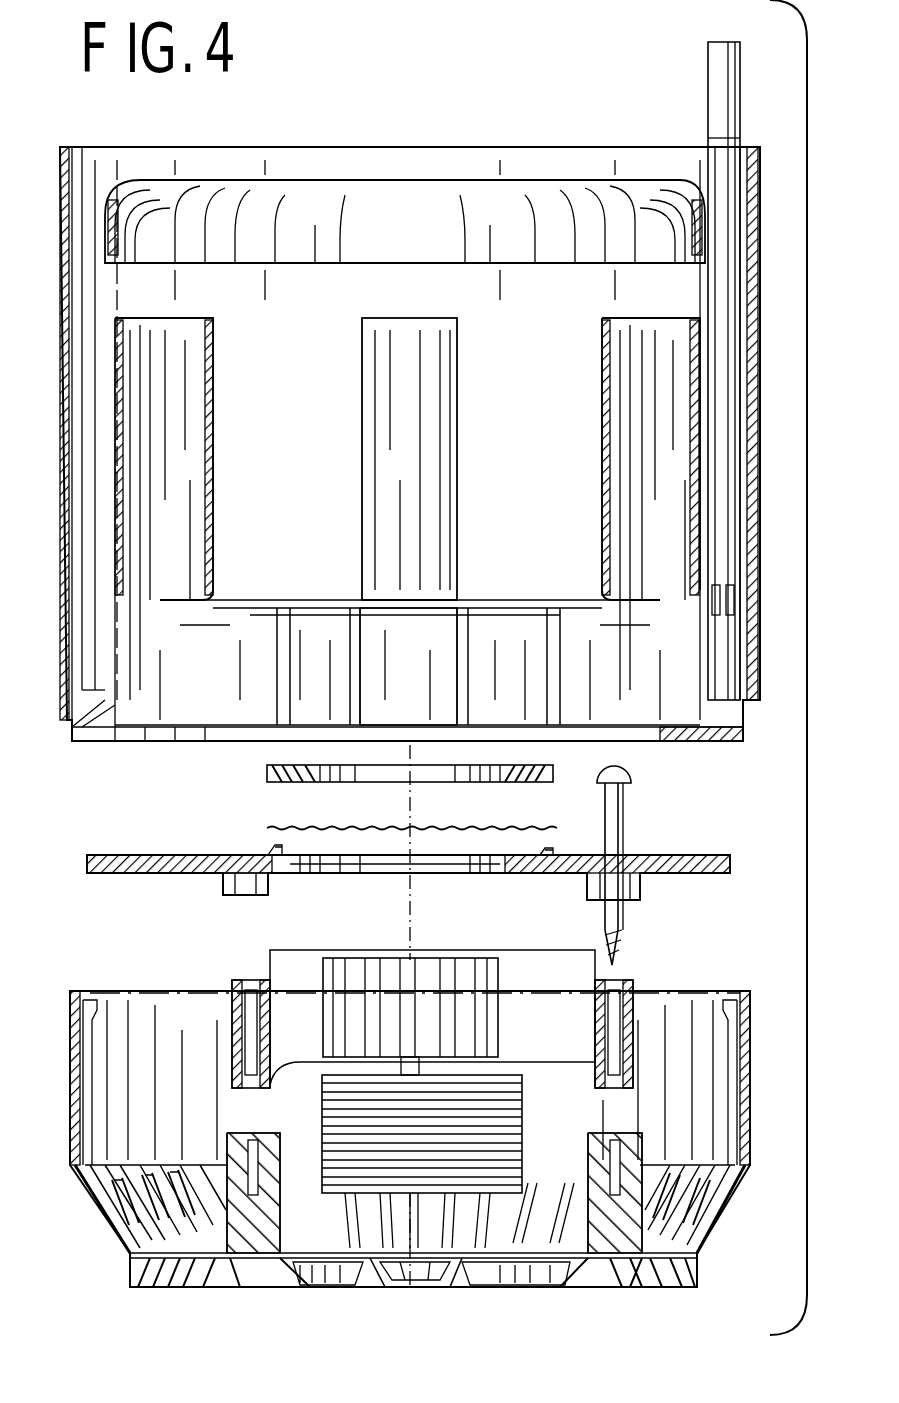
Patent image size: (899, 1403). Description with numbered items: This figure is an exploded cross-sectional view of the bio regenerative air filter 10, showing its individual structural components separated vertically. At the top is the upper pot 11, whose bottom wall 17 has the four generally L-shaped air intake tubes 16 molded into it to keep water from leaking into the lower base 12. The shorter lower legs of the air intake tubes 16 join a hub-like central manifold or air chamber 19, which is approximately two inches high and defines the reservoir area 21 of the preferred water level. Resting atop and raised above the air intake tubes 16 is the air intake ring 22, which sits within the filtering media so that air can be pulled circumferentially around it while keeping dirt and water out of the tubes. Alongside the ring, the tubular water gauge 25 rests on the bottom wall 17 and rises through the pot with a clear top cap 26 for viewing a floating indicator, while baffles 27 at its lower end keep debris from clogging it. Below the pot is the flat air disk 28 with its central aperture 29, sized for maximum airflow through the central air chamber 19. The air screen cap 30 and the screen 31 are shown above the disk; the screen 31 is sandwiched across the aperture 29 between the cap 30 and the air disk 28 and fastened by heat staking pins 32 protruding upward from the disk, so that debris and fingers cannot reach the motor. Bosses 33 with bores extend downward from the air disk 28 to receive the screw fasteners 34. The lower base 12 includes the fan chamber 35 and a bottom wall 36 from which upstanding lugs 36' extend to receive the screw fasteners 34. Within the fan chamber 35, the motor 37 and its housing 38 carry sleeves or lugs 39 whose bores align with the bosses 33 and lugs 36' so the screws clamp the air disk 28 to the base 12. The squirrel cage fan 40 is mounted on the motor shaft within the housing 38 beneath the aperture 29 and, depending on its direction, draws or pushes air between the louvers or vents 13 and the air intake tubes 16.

The bio regenerative air filter 10 is at (812, 566).
The upper pot 11 is at (105, 147).
The lower base 12 is at (70, 1080).
The louvers or vents 13 is at (175, 1215).
The air intake tubes 16 is at (213, 450).
The bottom wall of the pot 17 is at (688, 742).
The central manifold or air chamber 19 is at (426, 662).
The self-contained reservoir area 21 is at (228, 677).
The air intake ring 22 is at (427, 231).
The tubular water gauge 25 is at (715, 163).
The clear top cap 26 is at (722, 76).
The baffles 27 is at (735, 600).
The air disk 28 is at (118, 855).
The central aperture 29 is at (432, 873).
The air screen cap 30 is at (267, 775).
The screen 31 is at (267, 828).
The heat staking pins 32 is at (275, 850).
The bosses 33 is at (262, 895).
The screw fasteners 34 is at (612, 828).
The fan chamber 35 is at (680, 1060).
The bottom wall of the base 36 is at (431, 1294).
The upstanding lugs 36' is at (434, 1193).
The motor 37 is at (522, 1125).
The housing 38 is at (302, 1062).
The sleeves or lugs 39 is at (240, 980).
The squirrel cage fan 40 is at (470, 958).